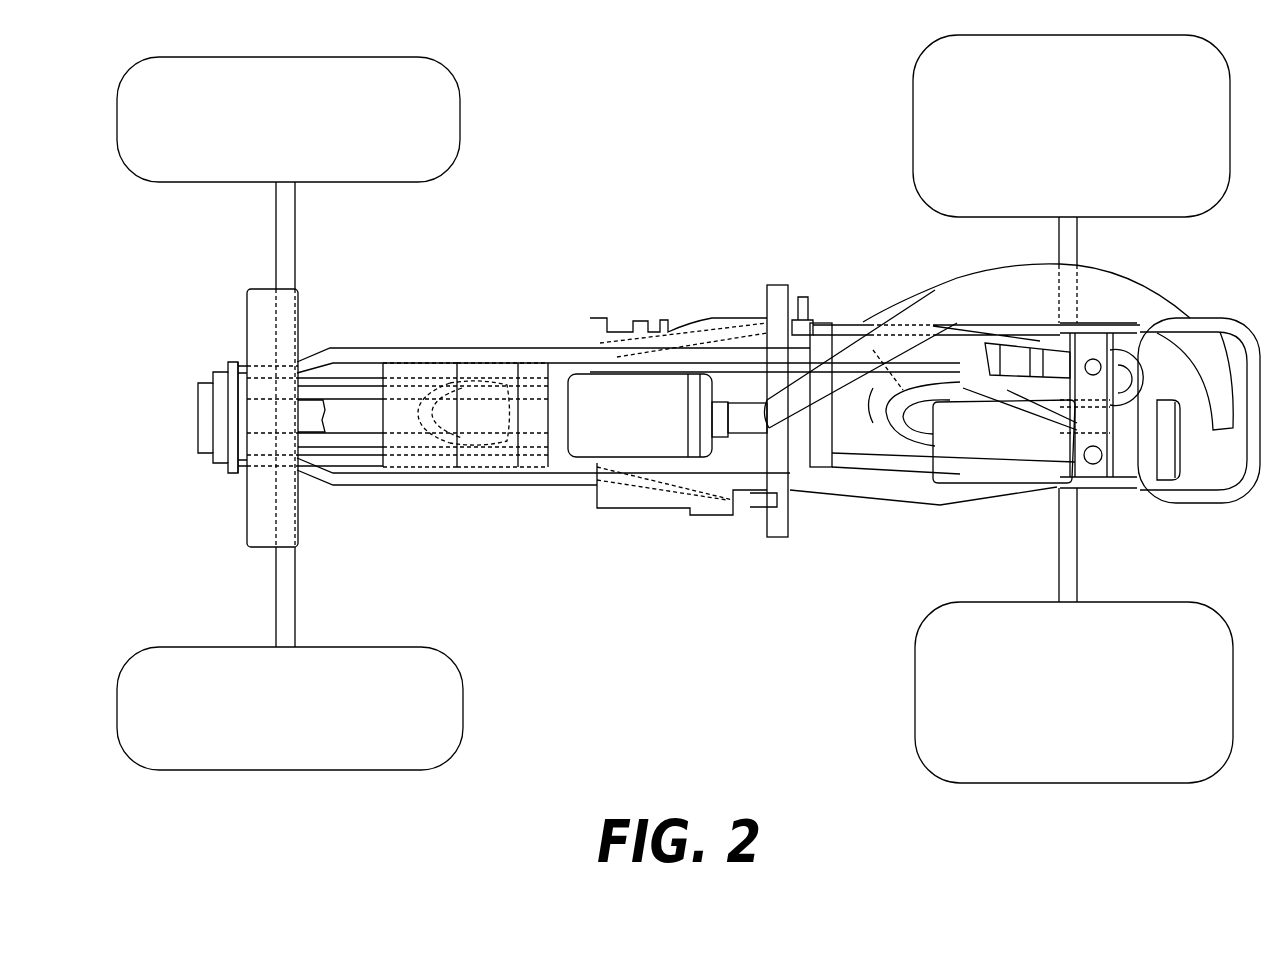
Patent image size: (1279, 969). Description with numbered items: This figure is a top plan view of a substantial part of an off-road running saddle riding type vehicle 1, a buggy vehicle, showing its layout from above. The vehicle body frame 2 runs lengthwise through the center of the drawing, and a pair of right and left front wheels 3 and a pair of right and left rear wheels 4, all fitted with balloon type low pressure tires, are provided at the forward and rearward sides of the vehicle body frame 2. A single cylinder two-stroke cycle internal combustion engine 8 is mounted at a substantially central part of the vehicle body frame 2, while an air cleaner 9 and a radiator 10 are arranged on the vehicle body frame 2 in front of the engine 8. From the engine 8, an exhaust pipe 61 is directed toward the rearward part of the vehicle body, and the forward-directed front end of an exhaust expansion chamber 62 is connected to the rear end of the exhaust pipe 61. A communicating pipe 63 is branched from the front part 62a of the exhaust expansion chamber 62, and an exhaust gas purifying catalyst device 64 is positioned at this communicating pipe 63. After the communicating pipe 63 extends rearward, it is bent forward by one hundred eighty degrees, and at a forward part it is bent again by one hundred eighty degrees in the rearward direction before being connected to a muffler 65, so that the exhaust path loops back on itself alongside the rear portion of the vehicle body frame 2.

The off-road running saddle riding type vehicle 1 is at (547, 272).
The vehicle body frame 2 is at (557, 486).
The front wheel 3 is at (403, 166).
The rear wheel 4 is at (913, 128).
The single cylinder 2-stroke cycle internal combustion engine 8 is at (625, 385).
The air cleaner 9 is at (535, 433).
The radiator 10 is at (246, 320).
The exhaust pipe 61 is at (746, 414).
The exhaust expansion chamber 62 is at (978, 285).
The front part of the exhaust expansion chamber 62a is at (868, 344).
The communicating pipe 63 is at (892, 434).
The exhaust gas purifying catalyst device 64 is at (1019, 364).
The muffler 65 is at (993, 452).